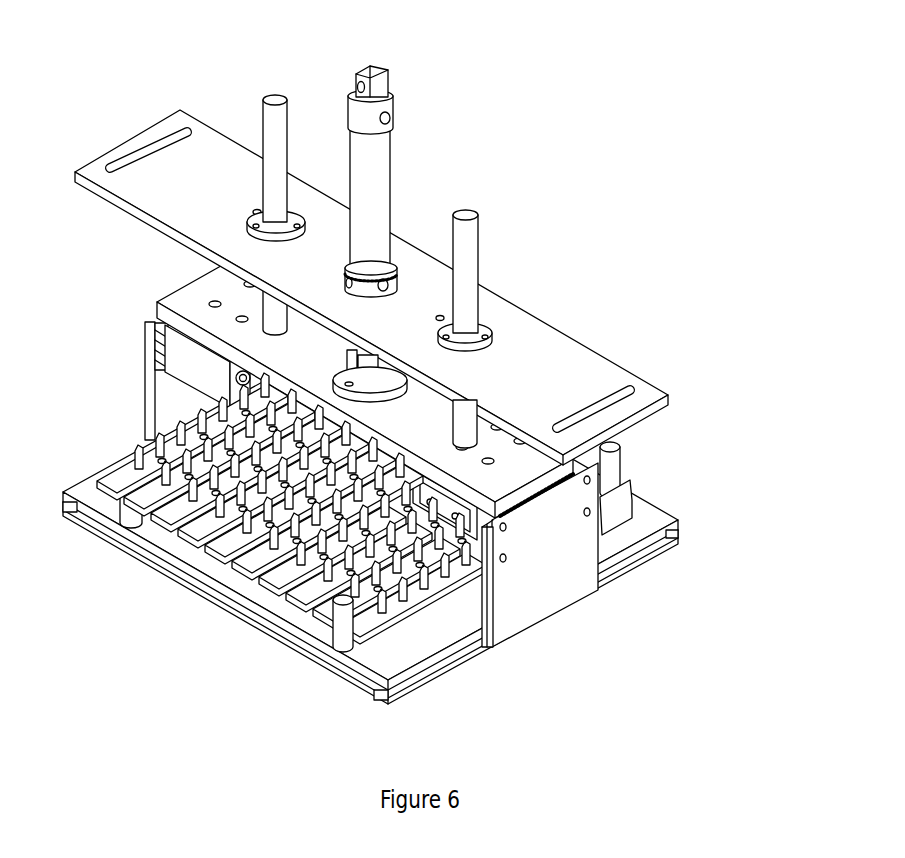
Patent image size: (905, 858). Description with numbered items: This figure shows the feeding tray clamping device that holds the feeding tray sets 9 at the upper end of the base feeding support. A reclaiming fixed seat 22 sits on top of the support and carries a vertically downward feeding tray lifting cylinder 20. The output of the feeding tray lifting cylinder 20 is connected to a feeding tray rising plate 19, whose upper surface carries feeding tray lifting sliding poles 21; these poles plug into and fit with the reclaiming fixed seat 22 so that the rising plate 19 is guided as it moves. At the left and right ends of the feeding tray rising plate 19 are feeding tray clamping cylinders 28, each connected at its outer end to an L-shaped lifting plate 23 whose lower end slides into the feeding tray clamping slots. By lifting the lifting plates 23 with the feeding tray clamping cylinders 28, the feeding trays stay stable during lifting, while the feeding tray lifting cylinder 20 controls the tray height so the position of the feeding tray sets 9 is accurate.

The feeding tray set 9 is at (265, 598).
The feeding tray rising plate 19 is at (410, 418).
The feeding tray lifting cylinder 20 is at (373, 160).
The feeding tray lifting sliding pole 21 is at (467, 273).
The reclaiming fixed seat 22 is at (557, 392).
The L-shaped lifting plate 23 is at (555, 570).
The feeding tray clamping cylinder 28 is at (493, 613).